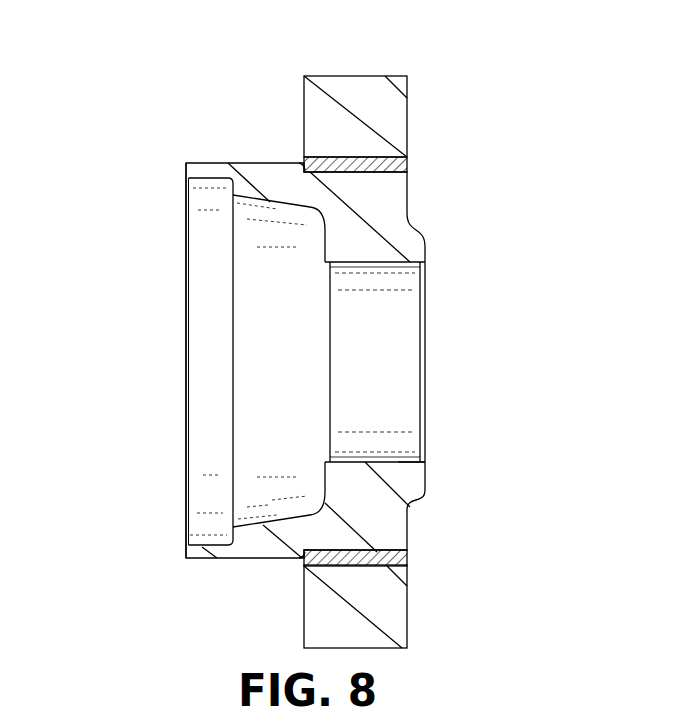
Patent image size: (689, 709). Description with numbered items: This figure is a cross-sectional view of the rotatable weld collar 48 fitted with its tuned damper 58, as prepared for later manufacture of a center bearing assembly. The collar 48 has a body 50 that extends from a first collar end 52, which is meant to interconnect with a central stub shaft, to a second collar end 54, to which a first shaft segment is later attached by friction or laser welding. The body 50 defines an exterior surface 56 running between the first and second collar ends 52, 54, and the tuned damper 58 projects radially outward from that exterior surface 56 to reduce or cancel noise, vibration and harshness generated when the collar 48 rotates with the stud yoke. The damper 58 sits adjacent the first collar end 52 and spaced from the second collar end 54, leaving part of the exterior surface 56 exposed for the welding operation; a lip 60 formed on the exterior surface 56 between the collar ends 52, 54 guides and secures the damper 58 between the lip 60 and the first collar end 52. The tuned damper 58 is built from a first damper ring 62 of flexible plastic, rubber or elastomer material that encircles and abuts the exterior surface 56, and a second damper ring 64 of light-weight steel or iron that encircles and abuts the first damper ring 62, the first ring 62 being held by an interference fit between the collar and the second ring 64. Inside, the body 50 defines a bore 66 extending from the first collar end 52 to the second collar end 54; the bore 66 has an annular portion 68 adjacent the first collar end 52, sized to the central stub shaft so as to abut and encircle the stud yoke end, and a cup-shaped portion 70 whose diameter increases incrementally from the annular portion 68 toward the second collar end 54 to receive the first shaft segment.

The rotatable weld collar 48 is at (430, 66).
The body 50 is at (383, 201).
The first collar end 52 is at (426, 244).
The second collar end 54 is at (186, 173).
The exterior surface 56 is at (242, 162).
The tuned damper 58 is at (333, 75).
The lip 60 is at (311, 160).
The first damper ring 62 is at (408, 167).
The second damper ring 64 is at (408, 103).
The bore 66 is at (273, 512).
The annular portion 68 is at (398, 460).
The cup-shaped portion 70 is at (273, 207).